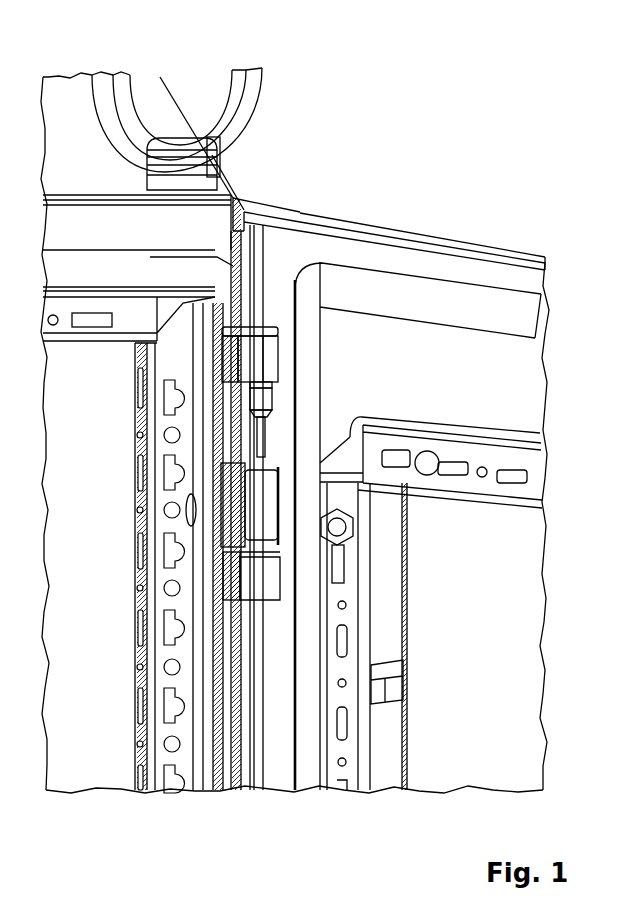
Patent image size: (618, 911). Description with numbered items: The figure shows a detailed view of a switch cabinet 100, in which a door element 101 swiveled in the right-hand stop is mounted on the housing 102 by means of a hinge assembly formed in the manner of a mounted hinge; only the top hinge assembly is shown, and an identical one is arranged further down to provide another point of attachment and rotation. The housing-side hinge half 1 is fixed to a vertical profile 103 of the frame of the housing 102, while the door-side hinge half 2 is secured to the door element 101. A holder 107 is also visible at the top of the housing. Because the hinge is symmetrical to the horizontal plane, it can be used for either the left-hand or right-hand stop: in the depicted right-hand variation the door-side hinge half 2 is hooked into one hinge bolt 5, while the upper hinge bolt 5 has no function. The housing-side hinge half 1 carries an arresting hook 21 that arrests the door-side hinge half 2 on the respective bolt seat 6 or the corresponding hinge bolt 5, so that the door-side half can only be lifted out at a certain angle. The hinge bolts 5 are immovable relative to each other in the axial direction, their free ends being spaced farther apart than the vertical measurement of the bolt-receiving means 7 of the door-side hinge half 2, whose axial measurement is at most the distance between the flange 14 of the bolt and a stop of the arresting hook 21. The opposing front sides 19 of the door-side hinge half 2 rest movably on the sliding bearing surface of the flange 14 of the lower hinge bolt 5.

The switch cabinet 100 is at (395, 121).
The door element 101 is at (498, 250).
The housing 102 is at (72, 92).
The vertical profile 103 is at (233, 790).
The holder bracket 107 is at (164, 95).
The housing-side hinge half 1 is at (268, 348).
The door-side hinge half 2 is at (261, 494).
The hinge bolt 5 is at (263, 400).
The bolt seat 6 is at (270, 360).
The bolt-receiving means 7 is at (253, 507).
The flange 14 is at (240, 543).
The front sides 19 is at (240, 463).
The arresting hook 21 is at (236, 467).